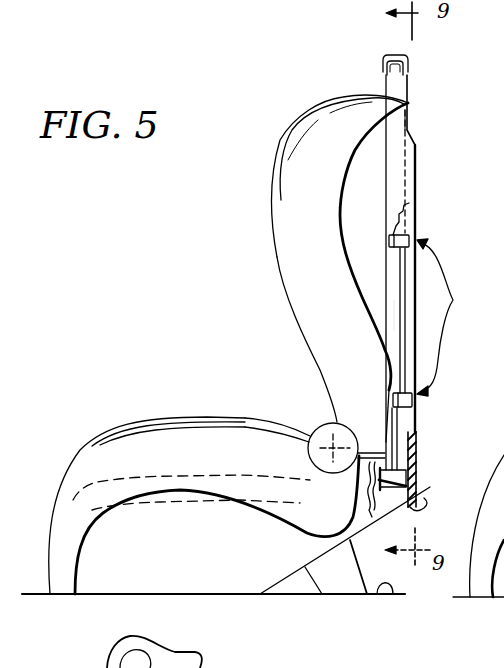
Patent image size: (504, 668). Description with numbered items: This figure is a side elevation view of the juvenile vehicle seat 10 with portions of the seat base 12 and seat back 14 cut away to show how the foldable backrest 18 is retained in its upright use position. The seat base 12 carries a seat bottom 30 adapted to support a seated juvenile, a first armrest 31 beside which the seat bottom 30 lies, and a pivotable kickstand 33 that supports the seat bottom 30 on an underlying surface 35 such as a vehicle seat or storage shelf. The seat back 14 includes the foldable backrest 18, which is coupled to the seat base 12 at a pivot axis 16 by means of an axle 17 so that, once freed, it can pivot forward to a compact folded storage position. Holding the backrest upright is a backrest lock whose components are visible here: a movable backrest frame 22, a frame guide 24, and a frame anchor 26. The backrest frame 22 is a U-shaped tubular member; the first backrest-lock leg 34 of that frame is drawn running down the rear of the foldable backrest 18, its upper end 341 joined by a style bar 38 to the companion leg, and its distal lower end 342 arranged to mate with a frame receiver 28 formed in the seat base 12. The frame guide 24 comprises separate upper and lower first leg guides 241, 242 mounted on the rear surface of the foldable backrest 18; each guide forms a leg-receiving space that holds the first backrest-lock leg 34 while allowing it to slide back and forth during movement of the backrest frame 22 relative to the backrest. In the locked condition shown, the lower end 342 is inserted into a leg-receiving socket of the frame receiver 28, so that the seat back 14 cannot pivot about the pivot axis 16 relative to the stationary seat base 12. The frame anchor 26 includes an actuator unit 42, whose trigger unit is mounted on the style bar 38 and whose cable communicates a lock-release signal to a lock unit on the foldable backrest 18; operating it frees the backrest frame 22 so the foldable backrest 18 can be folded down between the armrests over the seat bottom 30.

The juvenile vehicle seat 10 is at (136, 283).
The seat base 12 is at (81, 455).
The seat back 14 is at (271, 170).
The pivot axis 16 is at (308, 466).
The axle 17 is at (315, 429).
The foldable backrest 18 is at (387, 298).
The movable backrest frame 22 is at (411, 87).
The frame guide 24 is at (451, 317).
The frame anchor 26 is at (375, 62).
The frame receiver 28 is at (418, 482).
The seat bottom 30 is at (157, 474).
The first armrest 31 is at (211, 418).
The pivotable kickstand 33 is at (337, 582).
The first backrest-lock leg 34 is at (386, 333).
The underlying surface 35 is at (390, 583).
The style bar 38 is at (390, 67).
The actuator unit 42 is at (413, 58).
The upper first leg guide 241 is at (389, 240).
The lower first leg guide 242 is at (393, 399).
The upper end of first backrest-lock leg 341 is at (401, 123).
The lower end of first backrest-lock leg 342 is at (415, 489).